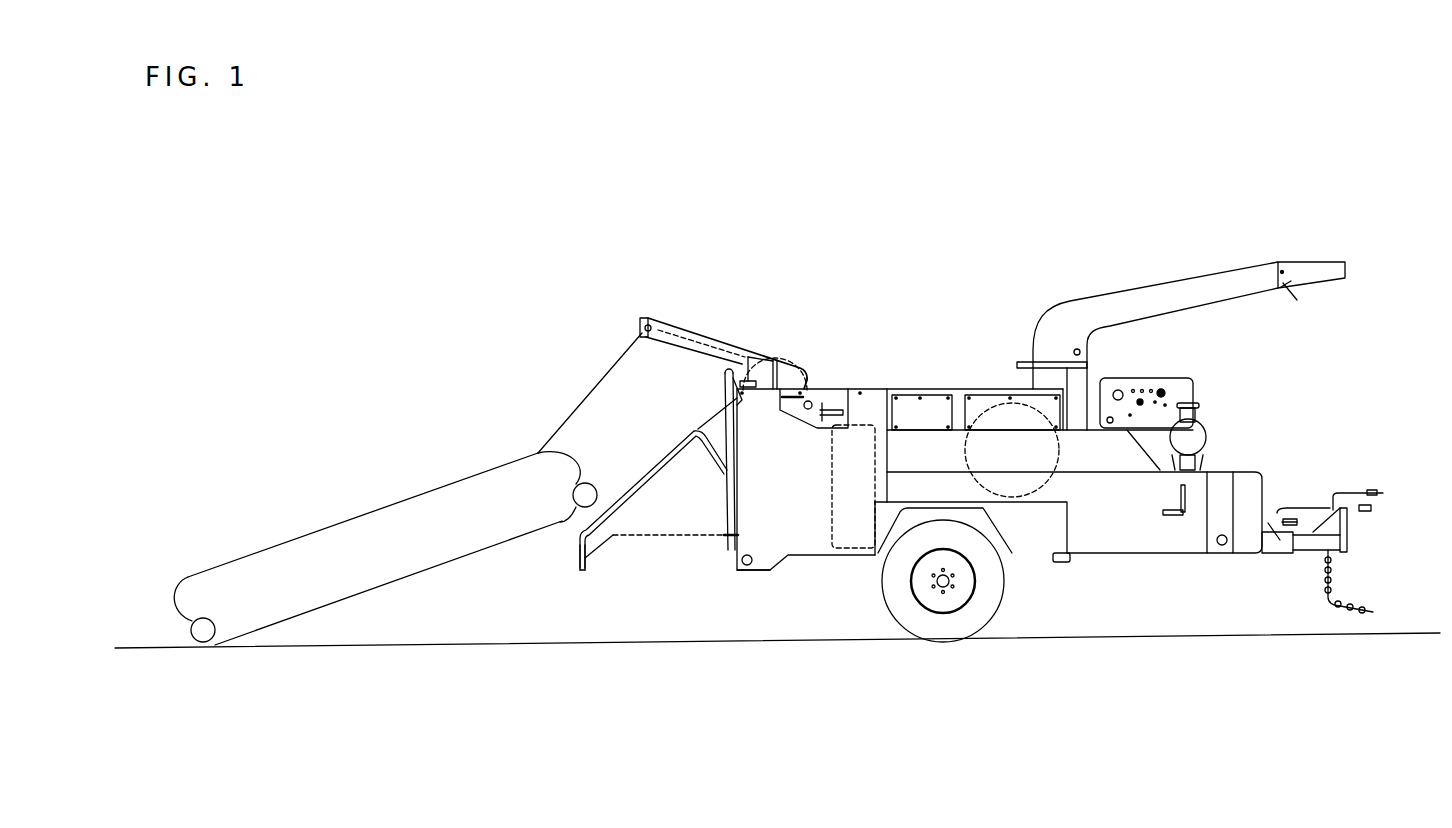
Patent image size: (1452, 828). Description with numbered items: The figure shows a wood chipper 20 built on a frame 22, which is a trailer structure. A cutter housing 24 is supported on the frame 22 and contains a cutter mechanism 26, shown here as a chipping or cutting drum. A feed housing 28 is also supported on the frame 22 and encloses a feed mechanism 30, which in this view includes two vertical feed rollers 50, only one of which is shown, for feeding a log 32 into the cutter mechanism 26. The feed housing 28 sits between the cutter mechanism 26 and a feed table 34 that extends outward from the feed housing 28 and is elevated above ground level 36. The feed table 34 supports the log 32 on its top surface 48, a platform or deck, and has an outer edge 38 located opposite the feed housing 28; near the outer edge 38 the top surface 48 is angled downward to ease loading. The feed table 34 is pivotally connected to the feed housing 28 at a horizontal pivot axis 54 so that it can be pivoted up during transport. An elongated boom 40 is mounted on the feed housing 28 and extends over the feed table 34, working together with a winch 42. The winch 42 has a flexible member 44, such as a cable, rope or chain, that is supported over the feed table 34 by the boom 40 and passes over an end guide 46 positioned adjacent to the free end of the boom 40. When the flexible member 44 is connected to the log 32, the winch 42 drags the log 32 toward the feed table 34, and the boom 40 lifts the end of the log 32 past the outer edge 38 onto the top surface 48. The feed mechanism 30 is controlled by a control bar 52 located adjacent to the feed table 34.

The wood chipper 20 is at (1330, 351).
The frame 22 is at (1100, 552).
The cutter housing 24 is at (951, 377).
The cutter mechanism 26 is at (995, 383).
The feed housing 28 is at (843, 553).
The feed mechanism 30 is at (861, 428).
The log 32 is at (340, 545).
The feed table 34 is at (630, 550).
The ground level 36 is at (290, 650).
The outer edge 38 is at (577, 560).
The elongated boom 40 is at (677, 325).
The winch 42 is at (780, 372).
The flexible member 44 is at (603, 380).
The end guide 46 is at (646, 316).
The top surface 48 is at (653, 535).
The vertical feed rollers 50 is at (831, 518).
The control bar 52 is at (727, 513).
The horizontal pivot axis 54 is at (737, 537).